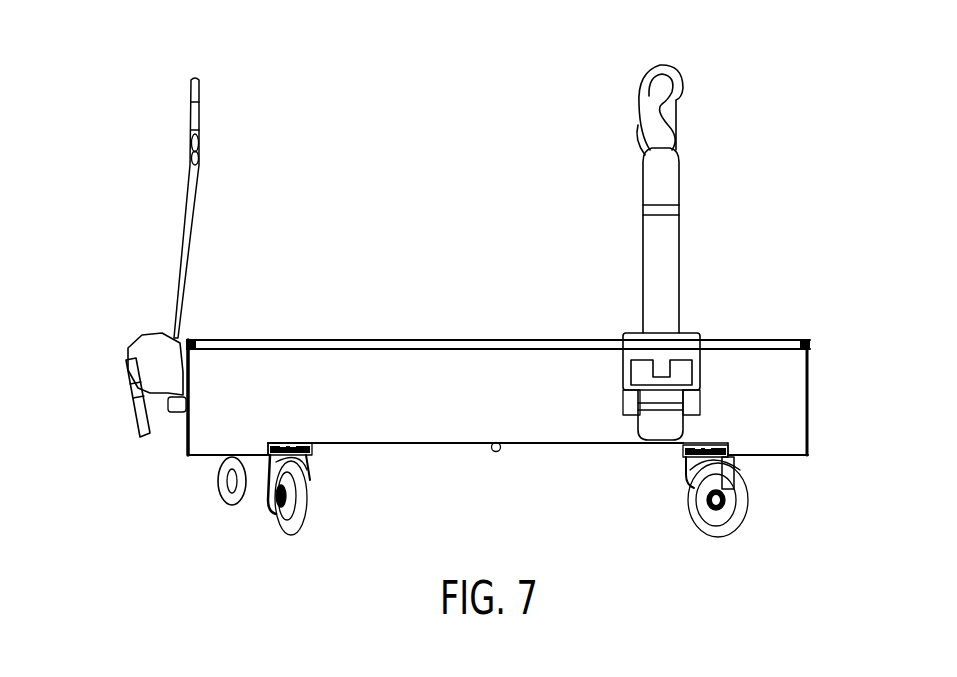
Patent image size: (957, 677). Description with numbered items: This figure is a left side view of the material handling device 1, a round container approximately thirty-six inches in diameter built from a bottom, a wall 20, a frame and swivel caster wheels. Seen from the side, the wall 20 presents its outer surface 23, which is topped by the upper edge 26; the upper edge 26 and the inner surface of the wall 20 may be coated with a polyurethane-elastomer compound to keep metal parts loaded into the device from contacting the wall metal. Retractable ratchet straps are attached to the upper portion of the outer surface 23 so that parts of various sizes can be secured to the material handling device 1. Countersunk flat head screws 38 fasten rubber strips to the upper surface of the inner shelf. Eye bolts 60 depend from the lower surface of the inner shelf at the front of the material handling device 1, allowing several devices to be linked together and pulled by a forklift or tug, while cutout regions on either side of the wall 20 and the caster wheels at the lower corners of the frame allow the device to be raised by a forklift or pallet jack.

The material handling device 1 is at (766, 114).
The wall 20 is at (303, 310).
The outer surface 23 is at (437, 404).
The upper edge 26 is at (472, 338).
The countersunk flat head screws 38 is at (500, 452).
The eye bolts 60 is at (215, 480).